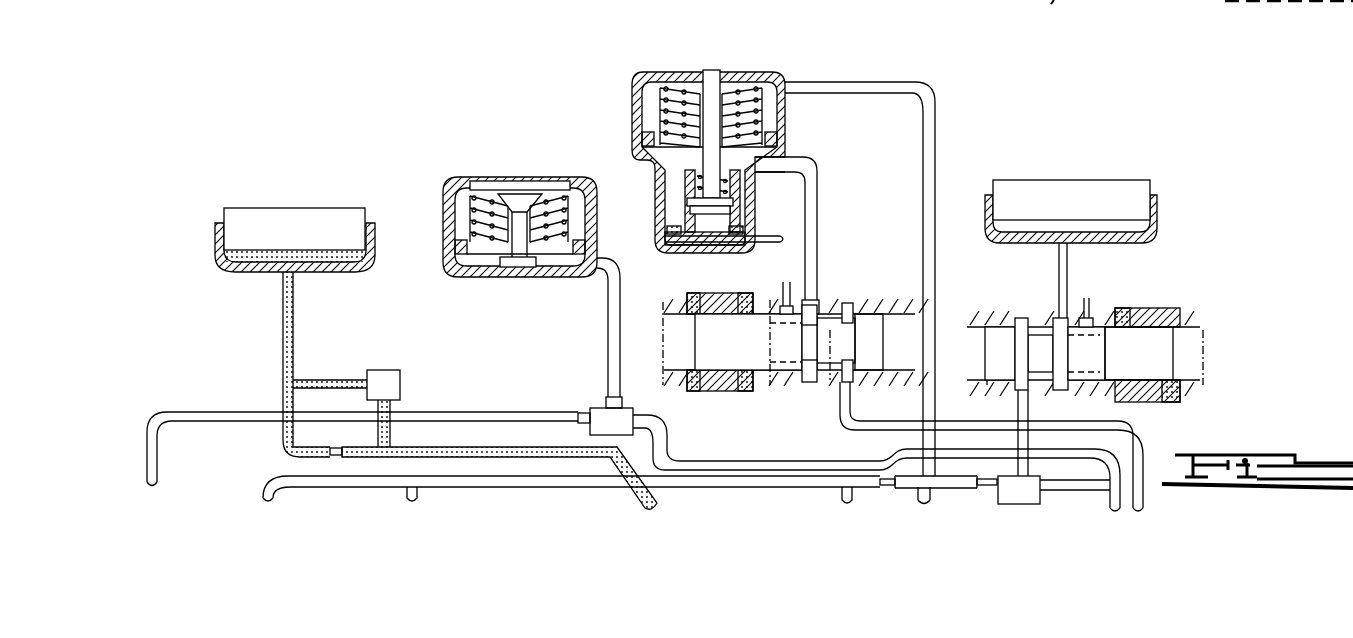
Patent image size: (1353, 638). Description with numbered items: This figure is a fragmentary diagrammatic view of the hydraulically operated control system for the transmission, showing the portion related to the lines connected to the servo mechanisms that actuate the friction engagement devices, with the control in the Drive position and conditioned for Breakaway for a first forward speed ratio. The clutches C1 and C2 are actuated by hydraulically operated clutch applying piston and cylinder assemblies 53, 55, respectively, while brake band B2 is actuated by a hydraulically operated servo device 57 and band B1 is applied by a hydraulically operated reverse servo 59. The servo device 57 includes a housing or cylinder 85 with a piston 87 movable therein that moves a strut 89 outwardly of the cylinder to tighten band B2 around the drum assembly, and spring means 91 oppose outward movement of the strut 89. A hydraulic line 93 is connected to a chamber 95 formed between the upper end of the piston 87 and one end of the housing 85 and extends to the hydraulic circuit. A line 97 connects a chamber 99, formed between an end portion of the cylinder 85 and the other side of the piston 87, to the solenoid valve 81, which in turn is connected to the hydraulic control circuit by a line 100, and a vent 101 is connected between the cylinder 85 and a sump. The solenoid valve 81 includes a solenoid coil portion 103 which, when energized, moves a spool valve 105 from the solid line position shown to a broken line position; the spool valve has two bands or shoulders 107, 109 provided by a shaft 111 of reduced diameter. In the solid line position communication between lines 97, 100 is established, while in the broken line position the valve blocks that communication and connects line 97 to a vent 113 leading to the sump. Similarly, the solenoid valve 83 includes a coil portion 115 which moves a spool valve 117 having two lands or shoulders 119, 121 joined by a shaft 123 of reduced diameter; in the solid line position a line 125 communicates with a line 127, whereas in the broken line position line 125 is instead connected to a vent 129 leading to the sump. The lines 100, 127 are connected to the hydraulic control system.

The clutch applying piston and cylinder assembly 53 is at (297, 213).
The clutch applying piston and cylinder assembly 55 is at (1100, 185).
The servo device 57 is at (762, 66).
The reverse servo 59 is at (550, 173).
The solenoid valve 81 is at (804, 384).
The solenoid valve 83 is at (1144, 294).
The housing or cylinder 85 is at (790, 100).
The piston 87 is at (655, 170).
The strut 89 is at (709, 70).
The spring means 91 is at (645, 95).
The hydraulic line 93 is at (898, 82).
The chamber 95 is at (770, 100).
The line 97 is at (818, 186).
The chamber 99 is at (785, 158).
The line 100 is at (968, 421).
The vent 101 is at (776, 236).
The solenoid coil portion 103 is at (690, 373).
The spool valve 105 is at (700, 322).
The band or shoulder 107 is at (820, 300).
The band or shoulder 109 is at (875, 305).
The shaft 111 is at (835, 388).
The vent 113 is at (781, 300).
The coil portion 115 is at (1174, 306).
The spool valve 117 is at (1160, 350).
The land or shoulder 119 is at (1094, 380).
The land or shoulder 121 is at (1033, 292).
The shaft 123 is at (1025, 352).
The line 125 is at (1058, 253).
The line 127 is at (1028, 470).
The vent 129 is at (1090, 312).